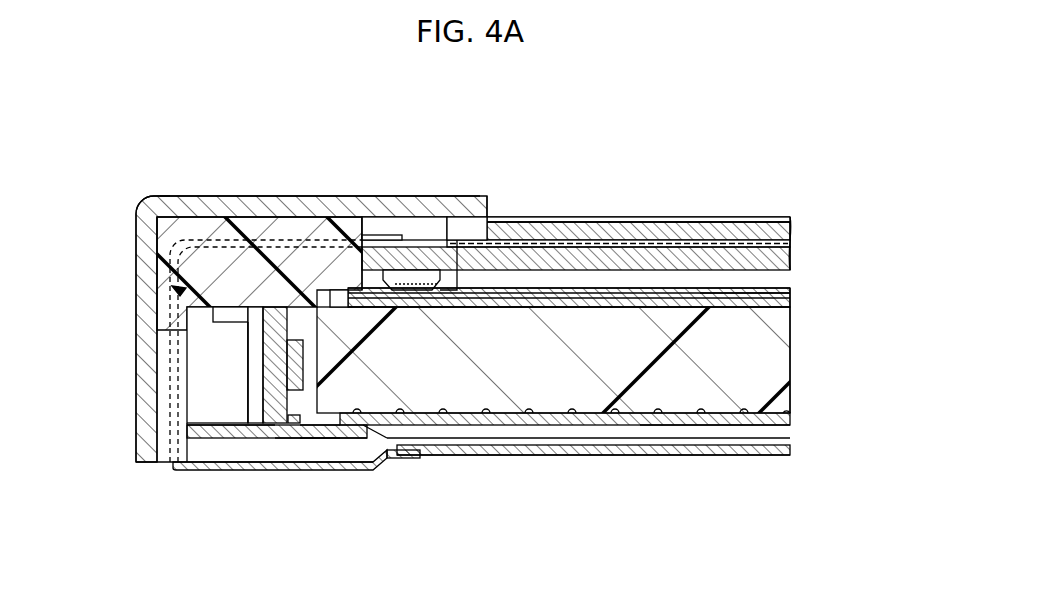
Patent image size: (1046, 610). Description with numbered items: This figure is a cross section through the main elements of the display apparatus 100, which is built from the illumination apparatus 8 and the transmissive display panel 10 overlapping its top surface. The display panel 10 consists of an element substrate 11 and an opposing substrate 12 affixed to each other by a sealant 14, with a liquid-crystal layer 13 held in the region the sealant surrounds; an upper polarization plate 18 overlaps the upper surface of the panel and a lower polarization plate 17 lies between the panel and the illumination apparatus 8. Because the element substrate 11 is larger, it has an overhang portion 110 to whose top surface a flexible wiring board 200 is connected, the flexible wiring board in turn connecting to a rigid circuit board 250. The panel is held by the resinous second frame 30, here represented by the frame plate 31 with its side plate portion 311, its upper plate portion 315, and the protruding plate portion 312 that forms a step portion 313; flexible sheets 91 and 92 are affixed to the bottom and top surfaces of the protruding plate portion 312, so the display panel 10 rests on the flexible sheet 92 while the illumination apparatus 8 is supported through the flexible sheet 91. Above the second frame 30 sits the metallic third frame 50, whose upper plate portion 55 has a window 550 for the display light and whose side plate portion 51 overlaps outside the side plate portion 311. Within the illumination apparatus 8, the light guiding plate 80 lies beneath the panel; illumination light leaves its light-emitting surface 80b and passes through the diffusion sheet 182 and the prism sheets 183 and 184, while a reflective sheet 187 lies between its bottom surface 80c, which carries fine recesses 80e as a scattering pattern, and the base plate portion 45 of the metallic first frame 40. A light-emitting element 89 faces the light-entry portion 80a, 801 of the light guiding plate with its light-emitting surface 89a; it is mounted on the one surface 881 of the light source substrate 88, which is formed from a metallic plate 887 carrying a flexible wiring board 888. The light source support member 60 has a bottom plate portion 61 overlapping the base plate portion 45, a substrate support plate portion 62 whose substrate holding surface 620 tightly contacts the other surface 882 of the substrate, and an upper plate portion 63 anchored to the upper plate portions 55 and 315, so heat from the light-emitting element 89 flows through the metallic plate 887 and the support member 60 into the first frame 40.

The display apparatus 100 is at (471, 82).
The third frame 50 is at (157, 183).
The upper plate portion 55 is at (176, 206).
The upper plate portion 315 is at (150, 212).
The side plate portion 51 is at (145, 260).
The side plate portion 311 is at (152, 420).
The second frame 30 is at (160, 281).
The frame plate 31 is at (227, 354).
The upper plate portion 63 is at (222, 305).
The another surface 882 is at (214, 305).
The one surface 881 is at (312, 300).
The substrate support plate portion 62 is at (273, 320).
The light-emitting element 89 is at (290, 383).
The substrate holding surface 620 is at (250, 362).
The light-emitting surface 89a is at (300, 423).
The protruding plate portion 312 is at (567, 410).
The illumination apparatus 8 is at (800, 306).
The display panel 10 is at (535, 152).
The sealant 14 is at (537, 218).
The element substrate 11 is at (565, 232).
The liquid-crystal layer 13 is at (597, 244).
The opposing substrate 12 is at (640, 258).
The upper polarization plate 18 is at (688, 218).
The lower polarization plate 17 is at (726, 218).
The flexible wiring board 200 is at (384, 240).
The flexible sheet 91 is at (396, 243).
The flexible sheet 92 is at (442, 250).
The step portion 313 is at (360, 240).
The overhang portion 110 is at (428, 232).
The window 550 is at (492, 218).
The light guiding plate 80 is at (621, 426).
The prism sheet 184 is at (794, 289).
The prism sheet 183 is at (794, 297).
The diffusion sheet 182 is at (794, 305).
The light-emitting surface 80b is at (750, 290).
The bottom surface 80c is at (662, 420).
The fine recess 80e is at (728, 420).
The light source substrate 88 is at (298, 523).
The metallic plate 887 is at (258, 440).
The flexible wiring board 888 is at (283, 440).
The light-entry portion 80a is at (305, 430).
The board end portion 801 is at (344, 498).
The first frame 40 is at (444, 442).
The circuit board 250 is at (528, 456).
The reflective sheet 187 is at (790, 455).
The base plate portion 45 is at (477, 452).
The light source support member 60 is at (205, 470).
The bottom plate portion 61 is at (190, 455).